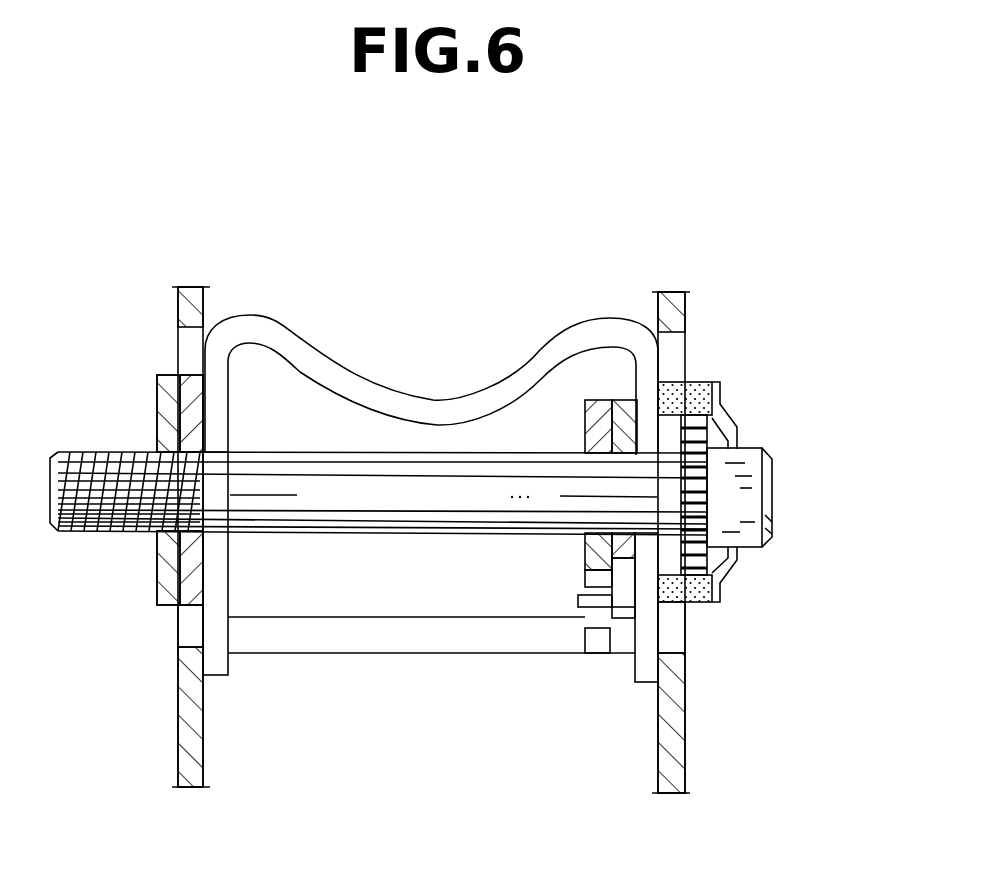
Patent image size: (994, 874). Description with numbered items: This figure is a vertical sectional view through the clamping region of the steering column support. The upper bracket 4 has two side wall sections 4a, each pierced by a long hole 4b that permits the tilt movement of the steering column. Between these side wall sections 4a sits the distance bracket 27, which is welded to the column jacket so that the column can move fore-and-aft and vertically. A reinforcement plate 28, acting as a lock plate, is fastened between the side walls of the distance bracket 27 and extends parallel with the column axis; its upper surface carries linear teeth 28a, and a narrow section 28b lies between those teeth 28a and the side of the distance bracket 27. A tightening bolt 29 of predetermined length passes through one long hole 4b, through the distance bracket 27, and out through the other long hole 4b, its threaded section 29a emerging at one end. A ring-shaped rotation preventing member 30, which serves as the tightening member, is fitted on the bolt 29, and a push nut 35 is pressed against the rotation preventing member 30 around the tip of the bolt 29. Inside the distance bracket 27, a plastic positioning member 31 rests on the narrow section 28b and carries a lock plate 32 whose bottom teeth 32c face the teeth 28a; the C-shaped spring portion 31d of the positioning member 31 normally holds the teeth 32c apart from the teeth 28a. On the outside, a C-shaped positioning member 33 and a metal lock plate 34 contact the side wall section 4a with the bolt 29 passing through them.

The upper bracket 4 is at (430, 564).
The side wall section 4a is at (203, 745).
The long hole 4b is at (187, 638).
The distance bracket 27 is at (417, 397).
The reinforcement plate 28 is at (427, 658).
The teeth 28a is at (577, 600).
The narrow section 28b is at (620, 625).
The tightening bolt 29 is at (774, 493).
The threaded section 29a is at (93, 533).
The rotation preventing member 30 is at (700, 380).
The positioning member 31 is at (622, 412).
The spring portion 31d is at (625, 603).
The lock plate 32 is at (598, 413).
The teeth 32c is at (603, 580).
The positioning member 33 is at (190, 427).
The lock plate 34 is at (157, 393).
The push nut 35 is at (737, 430).